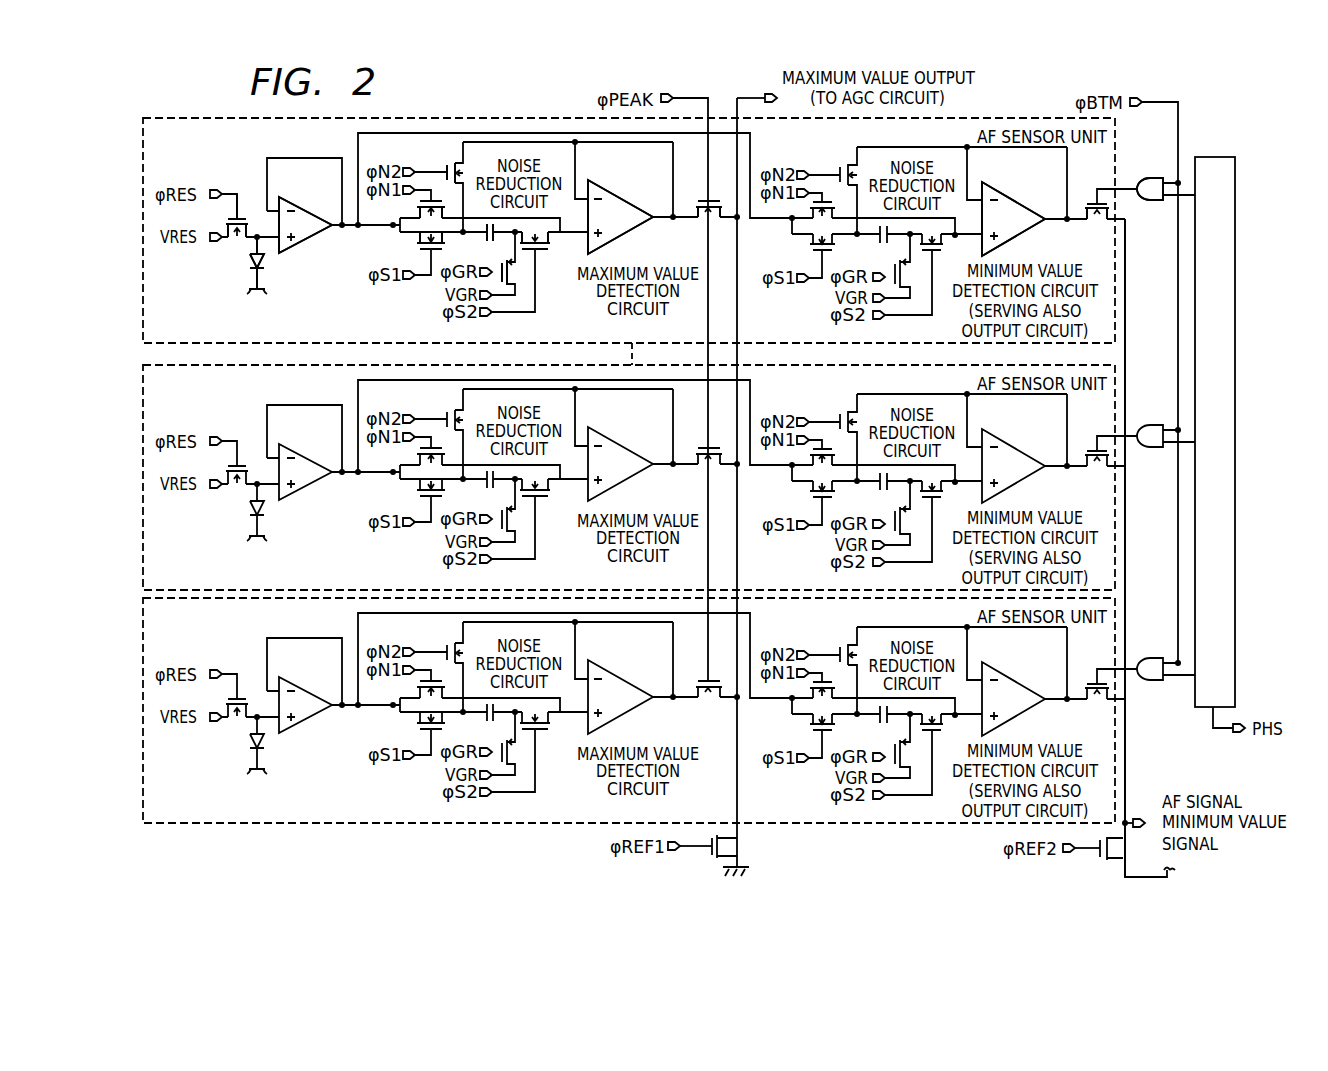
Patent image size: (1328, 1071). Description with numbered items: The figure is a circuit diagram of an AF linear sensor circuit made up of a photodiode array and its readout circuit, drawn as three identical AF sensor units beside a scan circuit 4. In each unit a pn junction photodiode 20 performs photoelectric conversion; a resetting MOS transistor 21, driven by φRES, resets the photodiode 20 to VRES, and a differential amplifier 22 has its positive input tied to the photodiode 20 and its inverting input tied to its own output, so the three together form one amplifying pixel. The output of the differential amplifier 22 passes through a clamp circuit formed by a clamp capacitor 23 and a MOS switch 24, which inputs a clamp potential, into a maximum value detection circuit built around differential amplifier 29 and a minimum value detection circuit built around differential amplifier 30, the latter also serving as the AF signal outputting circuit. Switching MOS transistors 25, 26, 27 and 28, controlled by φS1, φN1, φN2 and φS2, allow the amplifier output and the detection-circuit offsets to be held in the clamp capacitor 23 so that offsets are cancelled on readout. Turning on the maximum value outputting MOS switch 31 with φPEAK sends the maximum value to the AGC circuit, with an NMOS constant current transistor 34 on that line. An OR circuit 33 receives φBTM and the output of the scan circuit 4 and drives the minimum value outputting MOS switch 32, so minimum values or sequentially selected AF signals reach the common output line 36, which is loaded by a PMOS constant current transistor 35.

The scan circuit 4 is at (1222, 157).
The pn junction photodiode 20 is at (250, 262).
The resetting MOS transistor 21 is at (238, 216).
The differential amplifier 22 is at (302, 243).
The clamp capacitor 23 is at (494, 238).
The MOS switch 24 is at (507, 282).
The switching MOS transistor 25 is at (410, 236).
The switching MOS transistor 26 is at (405, 218).
The switching MOS transistor 27 is at (449, 166).
The switching MOS transistor 28 is at (543, 252).
The differential amplifier for detecting the maximum value 29 is at (622, 194).
The differential amplifier for detecting the minimum value 30 is at (1023, 198).
The MOS switch for outputting the maximum value 31 is at (703, 201).
The MOS switch for outputting the minimum value 32 is at (1093, 202).
The OR circuit 33 is at (1157, 178).
The NMOS transistor for a constant current 34 is at (737, 847).
The PMOS transistor for a constant current 35 is at (1098, 855).
The common output line 36 is at (1125, 326).